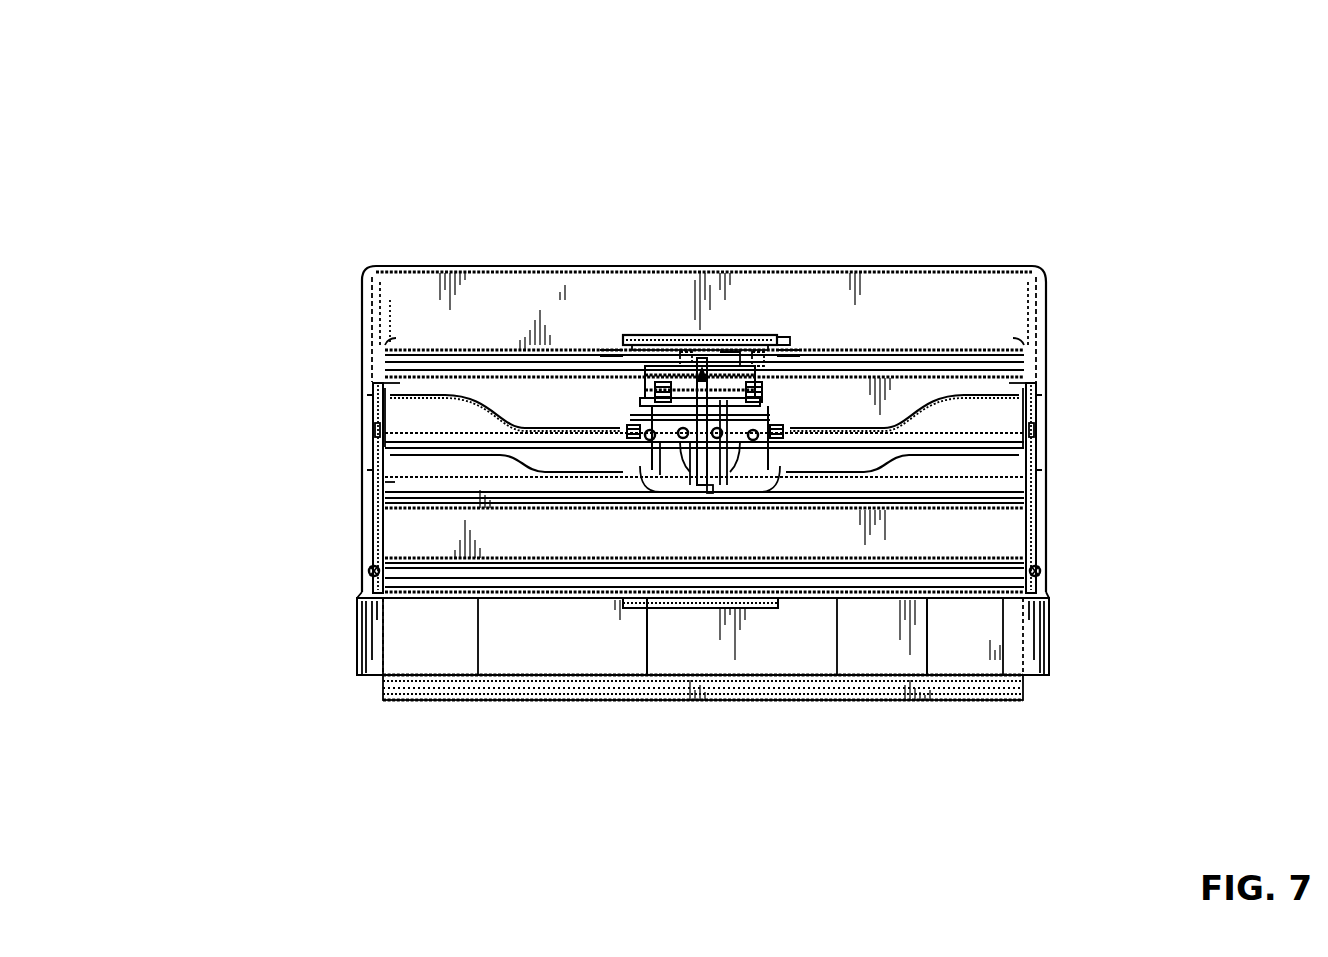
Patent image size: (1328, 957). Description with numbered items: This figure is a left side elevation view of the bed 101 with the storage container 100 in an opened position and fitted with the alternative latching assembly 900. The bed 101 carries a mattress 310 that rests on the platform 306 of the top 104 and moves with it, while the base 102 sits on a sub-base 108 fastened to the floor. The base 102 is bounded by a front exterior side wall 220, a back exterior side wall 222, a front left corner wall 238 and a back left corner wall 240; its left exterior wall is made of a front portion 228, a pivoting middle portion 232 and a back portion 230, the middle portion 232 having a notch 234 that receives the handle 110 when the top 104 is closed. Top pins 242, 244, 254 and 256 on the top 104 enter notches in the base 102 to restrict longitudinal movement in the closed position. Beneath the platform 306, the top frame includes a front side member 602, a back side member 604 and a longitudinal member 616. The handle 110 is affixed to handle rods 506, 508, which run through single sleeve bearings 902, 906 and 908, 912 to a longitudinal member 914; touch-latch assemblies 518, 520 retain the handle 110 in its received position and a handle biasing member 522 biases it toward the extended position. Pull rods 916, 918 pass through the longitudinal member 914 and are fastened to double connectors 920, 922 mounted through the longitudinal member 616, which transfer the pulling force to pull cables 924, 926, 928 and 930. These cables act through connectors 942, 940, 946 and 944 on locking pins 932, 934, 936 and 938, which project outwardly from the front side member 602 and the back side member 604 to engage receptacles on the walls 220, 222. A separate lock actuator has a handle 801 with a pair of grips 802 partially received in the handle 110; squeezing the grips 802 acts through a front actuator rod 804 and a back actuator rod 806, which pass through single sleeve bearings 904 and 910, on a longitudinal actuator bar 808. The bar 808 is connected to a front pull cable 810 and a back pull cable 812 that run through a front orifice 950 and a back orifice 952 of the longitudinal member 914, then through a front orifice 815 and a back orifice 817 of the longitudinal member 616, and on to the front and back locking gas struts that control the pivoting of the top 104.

The storage container 100 is at (192, 467).
The bed 101 is at (1102, 60).
The base 102 is at (348, 682).
The top 104 is at (343, 306).
The sub-base 108 is at (791, 716).
The handle 110 is at (665, 338).
The front exterior side wall 220 is at (343, 651).
The back exterior side wall 222 is at (1064, 655).
The front portion 228 is at (430, 636).
The back portion 230 is at (965, 636).
The middle portion 232 is at (882, 636).
The notch 234 is at (787, 617).
The front left corner wall 238 is at (370, 640).
The back left corner wall 240 is at (1030, 615).
The top pin 242 is at (417, 385).
The top pin 244 is at (963, 365).
The top pin 254 is at (435, 573).
The top pin 256 is at (968, 570).
The platform 306 is at (704, 542).
The mattress 310 is at (704, 334).
The handle rod 506 is at (637, 372).
The handle rod 508 is at (754, 378).
The touch-latch assembly 518 is at (642, 442).
The touch-latch assembly 520 is at (795, 430).
The handle biasing member 522 is at (690, 480).
The front side member 602 is at (380, 403).
The back side member 604 is at (1023, 410).
The longitudinal member 616 is at (400, 400).
The handle 801 is at (685, 440).
The grips 802 is at (771, 345).
The front actuator rod 804 is at (633, 350).
The back actuator rod 806 is at (801, 338).
The longitudinal actuator bar 808 is at (744, 335).
The front pull cable 810 is at (422, 480).
The back pull cable 812 is at (1000, 525).
The front orifice 815 is at (628, 455).
The back orifice 817 is at (786, 452).
The latching assembly 900 is at (609, 345).
The sleeve bearing 902 is at (615, 380).
The sleeve bearing 904 is at (588, 372).
The sleeve bearing 906 is at (562, 372).
The sleeve bearing 908 is at (770, 388).
The sleeve bearing 910 is at (775, 400).
The sleeve bearing 912 is at (764, 416).
The longitudinal member 914 is at (787, 432).
The pull rod 916 is at (668, 440).
The pull rod 918 is at (743, 440).
The double connector 920 is at (673, 440).
The double connector 922 is at (689, 480).
The pull cable 924 is at (438, 362).
The pull cable 926 is at (420, 458).
The pull cable 928 is at (1007, 385).
The pull cable 930 is at (1000, 420).
The locking pin 932 is at (368, 400).
The locking pin 934 is at (380, 470).
The locking pin 936 is at (1035, 405).
The locking pin 938 is at (1033, 468).
The connector 940 is at (393, 478).
The connector 942 is at (386, 398).
The connector 944 is at (1010, 472).
The connector 946 is at (1022, 385).
The front orifice 950 is at (668, 378).
The back orifice 952 is at (748, 372).